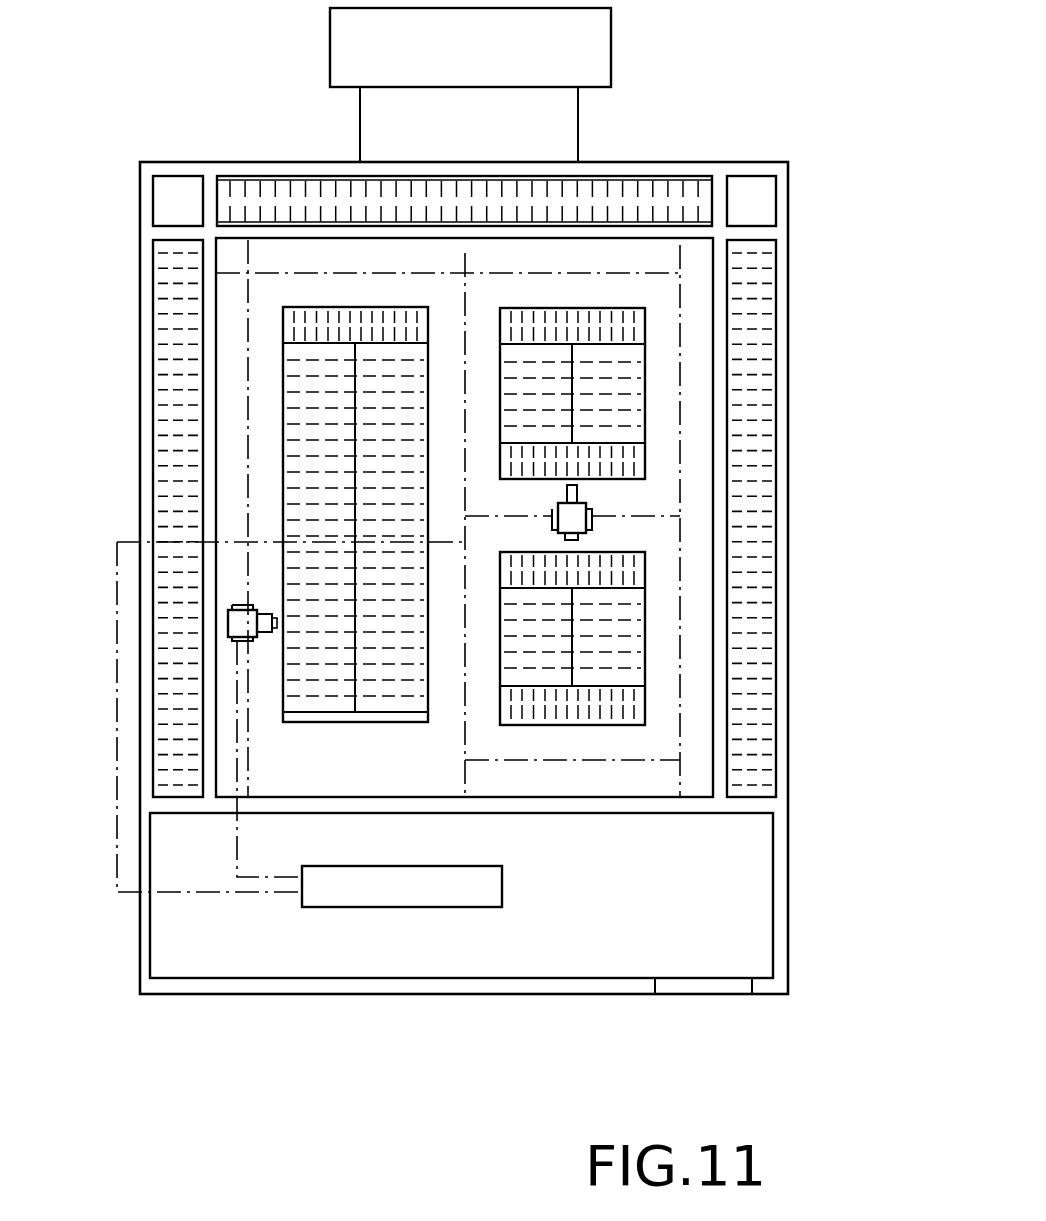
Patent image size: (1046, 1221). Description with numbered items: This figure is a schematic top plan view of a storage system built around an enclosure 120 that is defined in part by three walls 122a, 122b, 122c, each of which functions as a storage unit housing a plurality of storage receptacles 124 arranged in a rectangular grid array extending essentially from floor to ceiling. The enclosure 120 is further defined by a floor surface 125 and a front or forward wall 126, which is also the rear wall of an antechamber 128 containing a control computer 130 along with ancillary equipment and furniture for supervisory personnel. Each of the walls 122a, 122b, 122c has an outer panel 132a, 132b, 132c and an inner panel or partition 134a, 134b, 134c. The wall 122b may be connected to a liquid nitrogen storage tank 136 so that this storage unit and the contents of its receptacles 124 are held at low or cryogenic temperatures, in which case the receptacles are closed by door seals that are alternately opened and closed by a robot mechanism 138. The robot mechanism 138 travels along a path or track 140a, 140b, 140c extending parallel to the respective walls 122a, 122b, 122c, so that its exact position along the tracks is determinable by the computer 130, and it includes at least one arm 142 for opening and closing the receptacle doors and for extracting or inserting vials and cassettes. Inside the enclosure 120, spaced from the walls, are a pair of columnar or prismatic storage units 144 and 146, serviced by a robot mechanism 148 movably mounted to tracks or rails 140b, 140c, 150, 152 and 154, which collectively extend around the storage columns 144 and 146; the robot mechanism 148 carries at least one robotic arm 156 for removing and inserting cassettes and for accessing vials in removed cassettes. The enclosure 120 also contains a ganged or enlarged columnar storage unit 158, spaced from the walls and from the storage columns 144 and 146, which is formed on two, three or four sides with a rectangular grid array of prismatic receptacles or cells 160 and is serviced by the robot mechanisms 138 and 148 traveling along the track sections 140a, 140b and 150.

The enclosure 120 is at (252, 154).
The wall 122a is at (140, 176).
The wall 122b is at (642, 142).
The wall 122c is at (792, 193).
The storage receptacles 124 is at (233, 197).
The floor surface 125 is at (348, 775).
The front wall 126 is at (540, 812).
The antechamber 128 is at (720, 966).
The control computer 130 is at (405, 907).
The outer panel 132a is at (140, 257).
The outer panel 132b is at (390, 162).
The outer panel 132c is at (790, 262).
The inner panel 134a is at (210, 473).
The inner panel 134b is at (660, 237).
The inner panel 134c is at (730, 312).
The liquid nitrogen storage tank 136 is at (328, 40).
The robot mechanism 138 is at (237, 625).
The track 140a is at (247, 743).
The track 140b is at (415, 273).
The track 140c is at (680, 436).
The arm 142 is at (273, 632).
The columnar storage unit 144 is at (647, 373).
The columnar storage unit 146 is at (647, 680).
The robot mechanism 148 is at (592, 532).
The track 150 is at (462, 780).
The track 152 is at (647, 517).
The track 154 is at (630, 762).
The robotic arm 156 is at (577, 493).
The ganged columnar storage unit 158 is at (283, 513).
The cells 160 is at (310, 448).